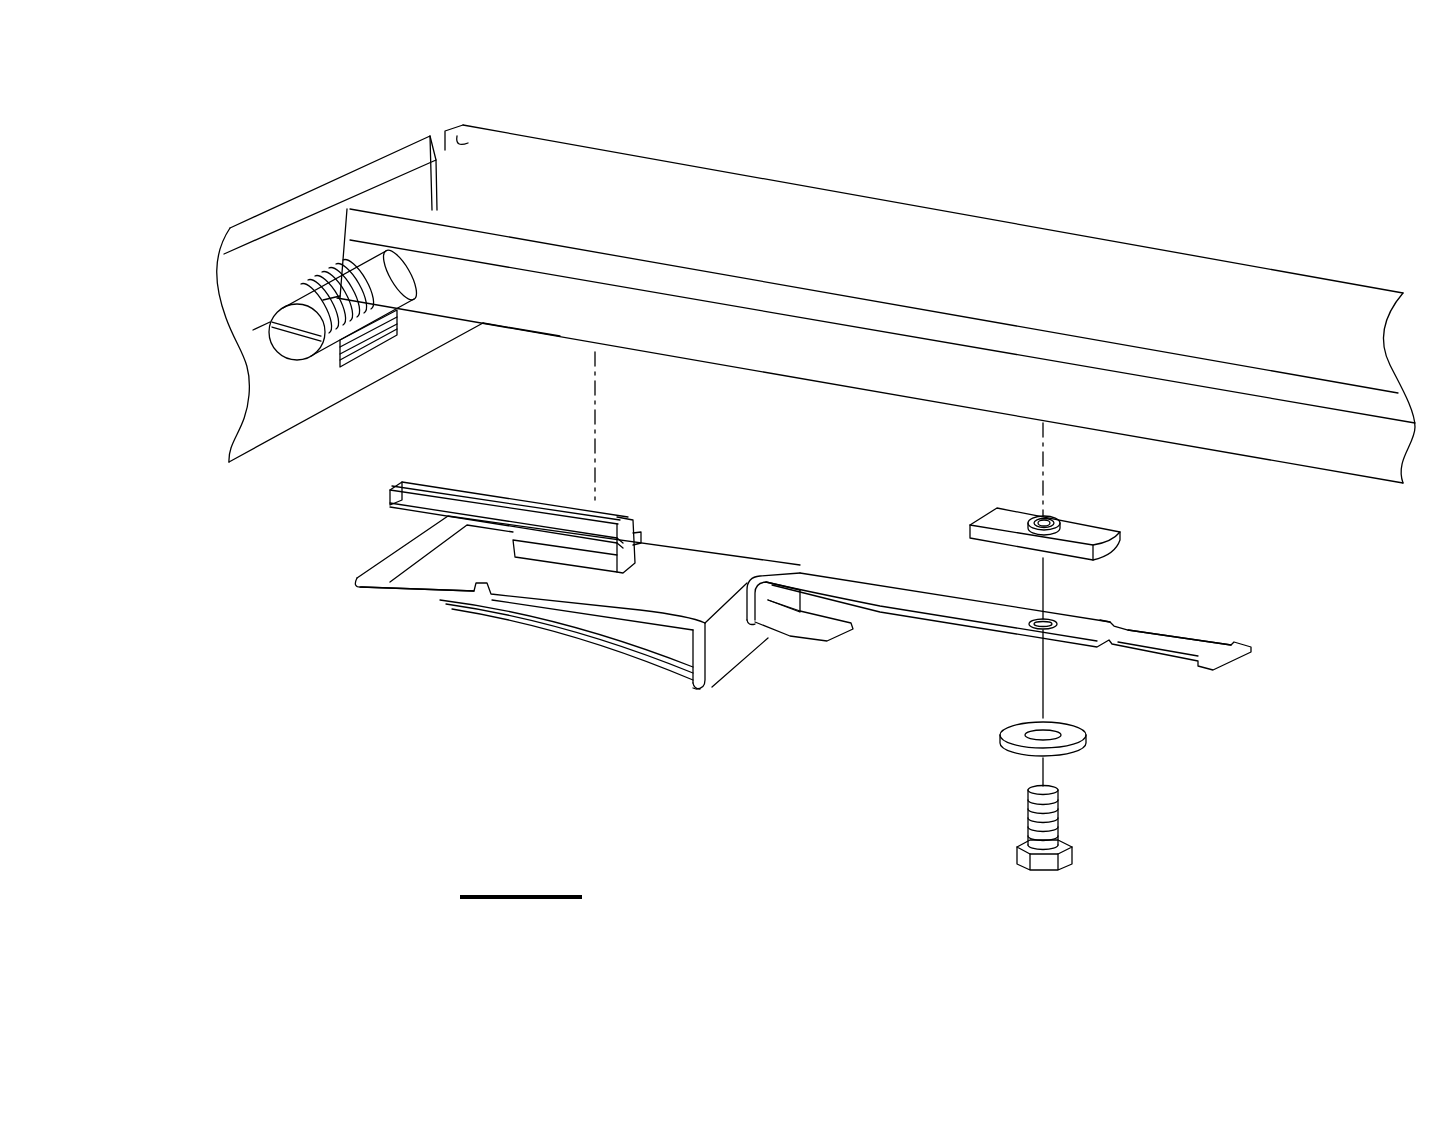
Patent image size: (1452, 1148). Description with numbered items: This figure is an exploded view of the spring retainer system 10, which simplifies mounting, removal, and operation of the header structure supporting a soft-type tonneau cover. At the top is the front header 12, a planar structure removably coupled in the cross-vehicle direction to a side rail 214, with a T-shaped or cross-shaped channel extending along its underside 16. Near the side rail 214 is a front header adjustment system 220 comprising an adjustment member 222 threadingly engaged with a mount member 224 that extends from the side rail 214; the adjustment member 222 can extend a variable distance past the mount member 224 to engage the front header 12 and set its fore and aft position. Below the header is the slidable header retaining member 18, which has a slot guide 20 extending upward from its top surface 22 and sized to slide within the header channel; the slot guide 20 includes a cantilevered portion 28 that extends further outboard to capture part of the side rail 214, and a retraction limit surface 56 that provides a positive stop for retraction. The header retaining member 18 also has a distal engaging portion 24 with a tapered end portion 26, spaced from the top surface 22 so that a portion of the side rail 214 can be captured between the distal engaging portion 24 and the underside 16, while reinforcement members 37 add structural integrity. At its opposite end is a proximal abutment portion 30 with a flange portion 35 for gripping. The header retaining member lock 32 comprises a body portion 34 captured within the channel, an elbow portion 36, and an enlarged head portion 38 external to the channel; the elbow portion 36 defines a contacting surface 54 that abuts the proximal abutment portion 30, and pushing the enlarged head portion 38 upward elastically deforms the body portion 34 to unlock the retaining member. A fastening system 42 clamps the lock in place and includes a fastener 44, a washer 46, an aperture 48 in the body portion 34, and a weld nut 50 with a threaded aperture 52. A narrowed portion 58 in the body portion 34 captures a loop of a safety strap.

The spring retainer system 10 is at (836, 832).
The front header 12 is at (975, 232).
The underside 16 is at (505, 333).
The header retaining member 18 is at (772, 602).
The slot guide 20 is at (559, 518).
The top surface 22 is at (797, 603).
The distal engaging portion 24 is at (403, 596).
The tapered end portion 26 is at (546, 594).
The cantilevered portion 28 is at (455, 493).
The proximal abutment portion 30 is at (683, 690).
The header retaining member lock 32 is at (1008, 611).
The body portion 34 is at (1083, 620).
The flange portion 35 is at (690, 685).
The elbow portion 36 is at (770, 578).
The reinforcement member 37 is at (508, 638).
The enlarged head portion 38 is at (823, 642).
The fastening system 42 is at (1095, 673).
The fastener 44 is at (1068, 853).
The washer 46 is at (1003, 742).
The aperture 48 is at (1036, 621).
The weld nut 50 is at (1079, 516).
The threaded aperture 52 is at (1050, 516).
The contacting surface 54 is at (745, 625).
The retraction limit surface 56 is at (645, 537).
The narrowed portion 58 is at (1184, 643).
The side rail 214 is at (279, 428).
The front header adjustment system 220 is at (317, 280).
The adjustment member 222 is at (283, 338).
The mount member 224 is at (358, 192).